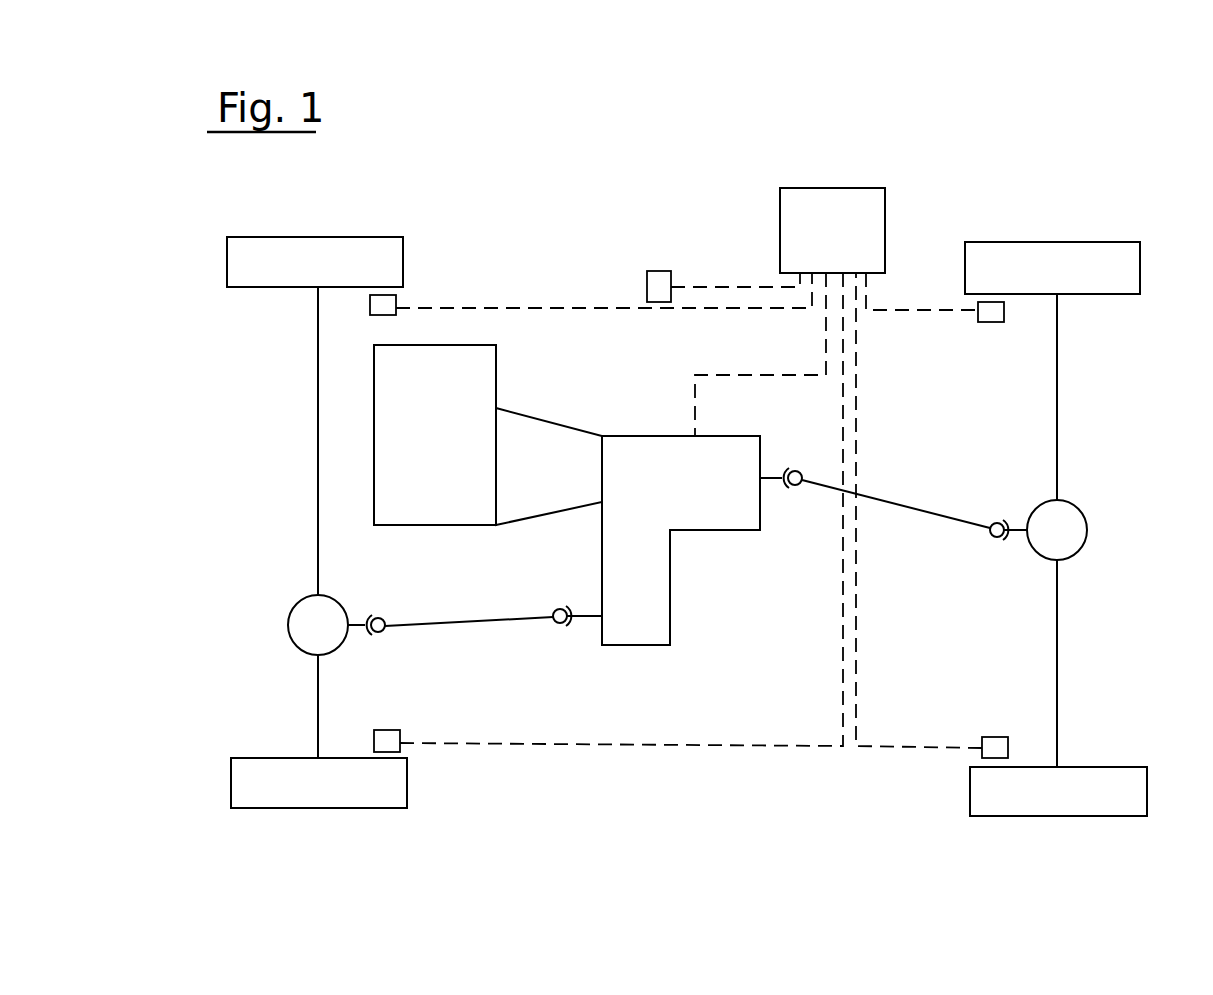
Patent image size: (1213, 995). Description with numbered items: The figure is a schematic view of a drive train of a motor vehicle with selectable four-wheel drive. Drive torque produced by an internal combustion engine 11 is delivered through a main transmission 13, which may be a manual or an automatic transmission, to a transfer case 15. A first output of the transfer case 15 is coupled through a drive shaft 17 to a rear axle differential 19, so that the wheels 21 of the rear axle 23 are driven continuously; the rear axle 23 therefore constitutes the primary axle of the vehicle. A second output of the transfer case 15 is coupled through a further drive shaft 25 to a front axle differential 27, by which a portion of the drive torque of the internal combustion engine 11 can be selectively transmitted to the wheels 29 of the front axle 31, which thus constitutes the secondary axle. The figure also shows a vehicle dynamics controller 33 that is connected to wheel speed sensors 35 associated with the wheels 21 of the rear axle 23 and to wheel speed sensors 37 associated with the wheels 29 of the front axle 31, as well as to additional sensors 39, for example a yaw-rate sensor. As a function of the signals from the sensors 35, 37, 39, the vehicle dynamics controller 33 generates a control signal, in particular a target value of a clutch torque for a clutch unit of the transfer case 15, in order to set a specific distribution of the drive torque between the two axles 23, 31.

The internal combustion engine 11 is at (435, 435).
The main transmission 13 is at (549, 466).
The transfer case 15 is at (681, 540).
The drive shaft 17 is at (897, 502).
The rear axle differential 19 is at (1087, 520).
The wheels 21 is at (1110, 242).
The rear axle 23 is at (1105, 419).
The drive shaft 25 is at (470, 625).
The front axle differential 27 is at (288, 617).
The wheels 29 is at (246, 237).
The front axle 31 is at (290, 489).
The vehicle dynamics controller 33 is at (836, 312).
The wheel speed sensors 35 is at (993, 322).
The wheel speed sensors 37 is at (370, 302).
The additional sensors 39 is at (657, 271).